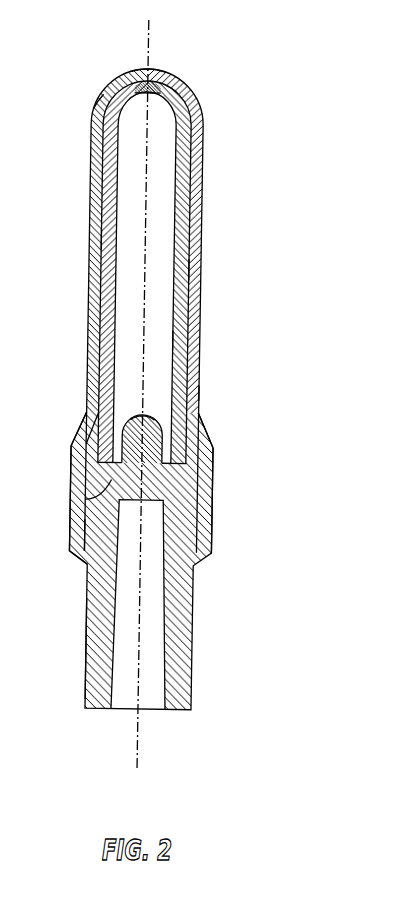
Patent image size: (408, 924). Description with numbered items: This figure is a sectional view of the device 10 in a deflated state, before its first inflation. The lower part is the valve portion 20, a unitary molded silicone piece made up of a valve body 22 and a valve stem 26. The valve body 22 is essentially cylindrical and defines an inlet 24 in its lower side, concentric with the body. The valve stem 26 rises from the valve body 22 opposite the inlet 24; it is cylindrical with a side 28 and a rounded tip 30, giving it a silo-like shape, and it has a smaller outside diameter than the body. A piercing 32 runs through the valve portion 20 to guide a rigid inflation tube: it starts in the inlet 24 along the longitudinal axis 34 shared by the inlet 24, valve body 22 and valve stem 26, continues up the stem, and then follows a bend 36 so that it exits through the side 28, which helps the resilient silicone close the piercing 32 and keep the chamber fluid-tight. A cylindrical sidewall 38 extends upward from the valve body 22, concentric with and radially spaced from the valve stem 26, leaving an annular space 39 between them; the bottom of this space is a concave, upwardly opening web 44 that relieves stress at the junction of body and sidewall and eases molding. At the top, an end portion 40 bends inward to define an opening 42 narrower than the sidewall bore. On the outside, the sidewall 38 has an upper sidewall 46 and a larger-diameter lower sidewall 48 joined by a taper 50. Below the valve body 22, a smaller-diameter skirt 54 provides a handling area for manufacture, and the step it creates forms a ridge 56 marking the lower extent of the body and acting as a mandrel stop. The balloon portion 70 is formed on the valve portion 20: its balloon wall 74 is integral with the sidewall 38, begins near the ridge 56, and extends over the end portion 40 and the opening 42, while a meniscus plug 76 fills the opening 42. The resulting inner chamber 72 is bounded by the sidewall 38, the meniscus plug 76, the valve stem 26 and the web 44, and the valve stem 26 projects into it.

The device 10 is at (288, 72).
The valve portion 20 is at (208, 506).
The valve body 22 is at (209, 441).
The inlet 24 is at (150, 698).
The valve stem 26 is at (145, 438).
The side 28 is at (199, 393).
The tip 30 is at (143, 411).
The piercing 32 is at (87, 539).
The longitudinal axis 34 is at (128, 738).
The bend 36 is at (114, 494).
The cylindrical sidewall 38 is at (101, 287).
The annular space 39 is at (203, 421).
The end portion 40 is at (96, 114).
The opening 42 is at (156, 73).
The web 44 is at (96, 456).
The upper sidewall 46 is at (103, 239).
The lower sidewall 48 is at (96, 450).
The taper 50 is at (86, 418).
The skirt 54 is at (87, 650).
The ridge 56 is at (83, 566).
The balloon portion 70 is at (210, 163).
The inner chamber 72 is at (192, 270).
The balloon wall 74 is at (194, 340).
The meniscus plug 76 is at (142, 73).